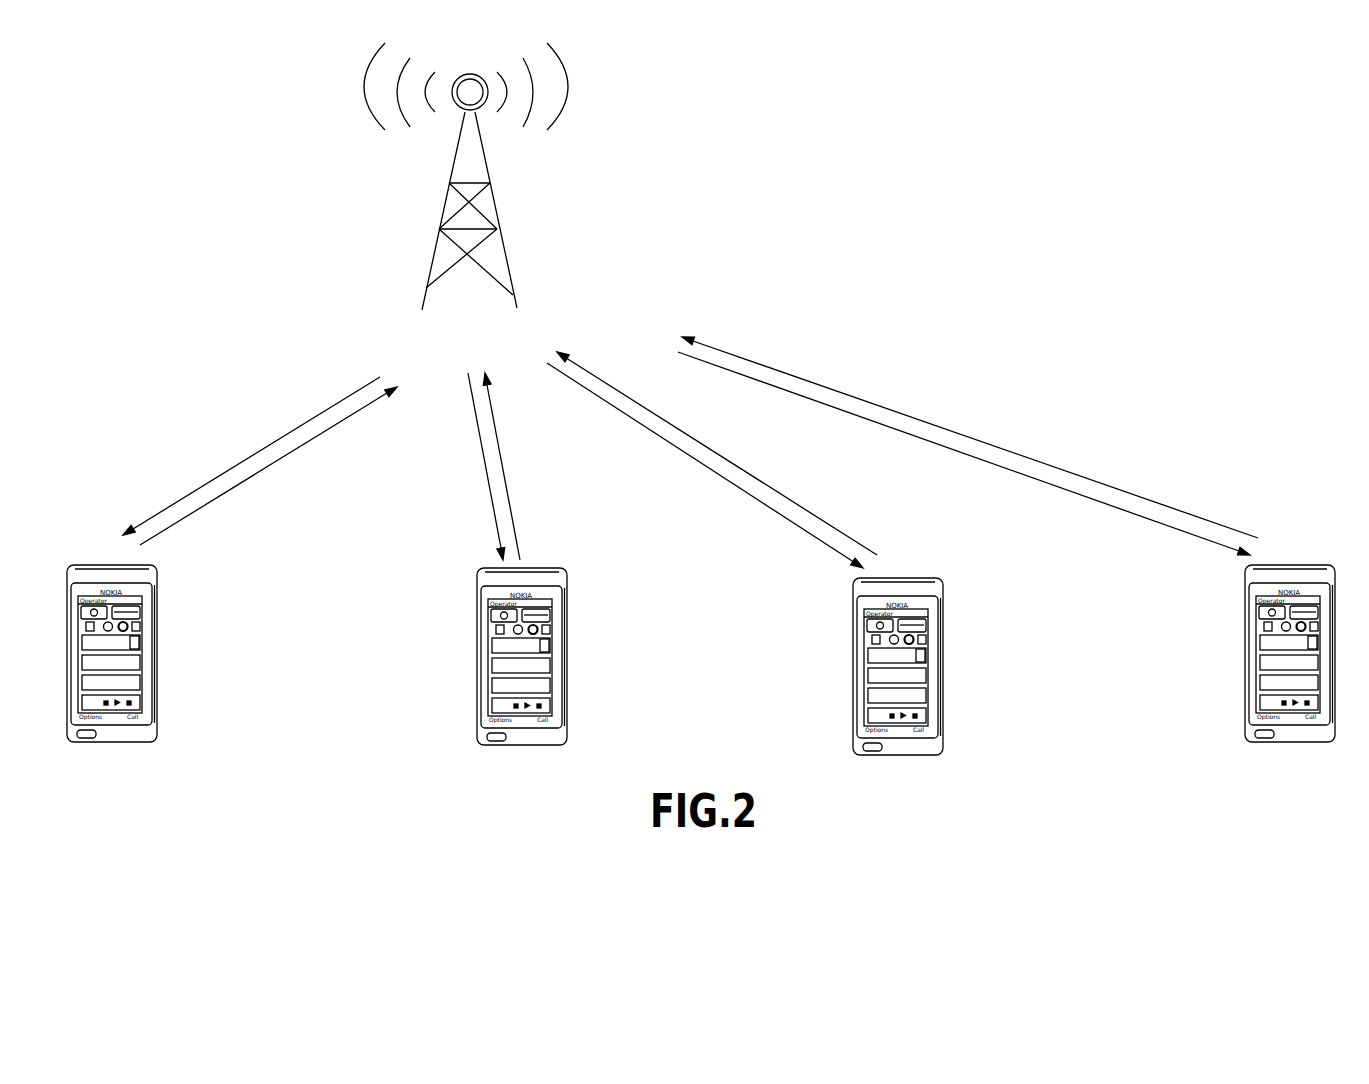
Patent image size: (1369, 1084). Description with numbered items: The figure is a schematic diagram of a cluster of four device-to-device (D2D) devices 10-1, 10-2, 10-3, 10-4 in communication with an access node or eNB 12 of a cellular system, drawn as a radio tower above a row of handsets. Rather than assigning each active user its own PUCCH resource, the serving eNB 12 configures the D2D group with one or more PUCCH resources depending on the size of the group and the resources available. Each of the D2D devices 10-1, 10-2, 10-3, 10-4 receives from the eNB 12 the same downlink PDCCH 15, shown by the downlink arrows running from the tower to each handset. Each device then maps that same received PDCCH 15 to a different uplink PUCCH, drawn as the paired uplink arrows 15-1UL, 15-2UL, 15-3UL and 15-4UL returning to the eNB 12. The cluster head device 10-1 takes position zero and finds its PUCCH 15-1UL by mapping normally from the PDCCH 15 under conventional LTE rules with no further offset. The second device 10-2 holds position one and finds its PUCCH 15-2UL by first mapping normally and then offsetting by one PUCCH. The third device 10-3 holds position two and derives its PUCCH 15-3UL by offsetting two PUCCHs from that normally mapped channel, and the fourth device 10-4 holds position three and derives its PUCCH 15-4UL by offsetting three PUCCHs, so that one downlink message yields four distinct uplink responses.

The access node or eNB 12 is at (497, 229).
The PDCCH 15 is at (260, 450).
The PUCCH of the cluster head device 15-1UL is at (258, 470).
The PUCCH of the second device 15-2UL is at (505, 470).
The PUCCH of the third device 15-3UL is at (752, 473).
The PUCCH of the fourth device 15-4UL is at (978, 440).
The cluster head device 10-1 is at (182, 671).
The second device 10-2 is at (594, 671).
The third device 10-3 is at (969, 690).
The fourth device 10-4 is at (1225, 636).